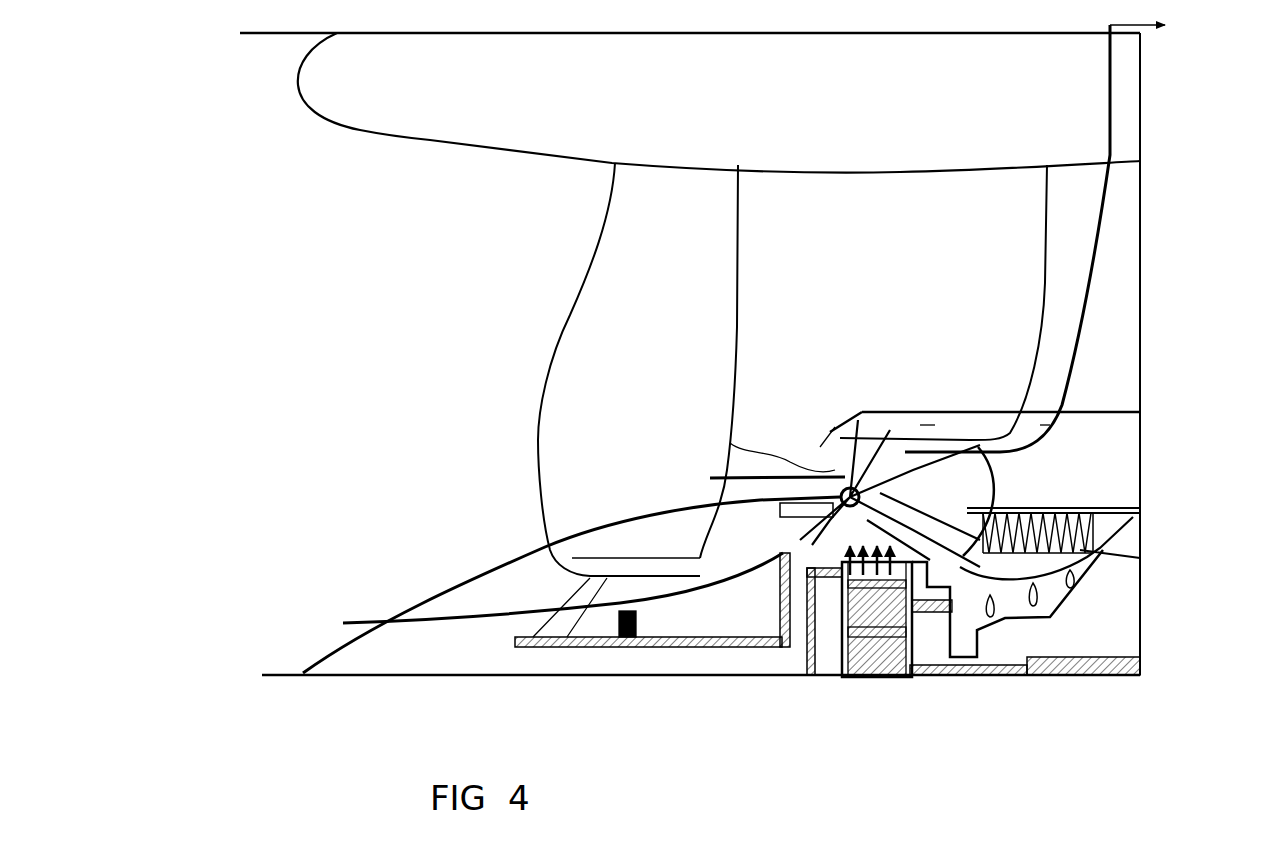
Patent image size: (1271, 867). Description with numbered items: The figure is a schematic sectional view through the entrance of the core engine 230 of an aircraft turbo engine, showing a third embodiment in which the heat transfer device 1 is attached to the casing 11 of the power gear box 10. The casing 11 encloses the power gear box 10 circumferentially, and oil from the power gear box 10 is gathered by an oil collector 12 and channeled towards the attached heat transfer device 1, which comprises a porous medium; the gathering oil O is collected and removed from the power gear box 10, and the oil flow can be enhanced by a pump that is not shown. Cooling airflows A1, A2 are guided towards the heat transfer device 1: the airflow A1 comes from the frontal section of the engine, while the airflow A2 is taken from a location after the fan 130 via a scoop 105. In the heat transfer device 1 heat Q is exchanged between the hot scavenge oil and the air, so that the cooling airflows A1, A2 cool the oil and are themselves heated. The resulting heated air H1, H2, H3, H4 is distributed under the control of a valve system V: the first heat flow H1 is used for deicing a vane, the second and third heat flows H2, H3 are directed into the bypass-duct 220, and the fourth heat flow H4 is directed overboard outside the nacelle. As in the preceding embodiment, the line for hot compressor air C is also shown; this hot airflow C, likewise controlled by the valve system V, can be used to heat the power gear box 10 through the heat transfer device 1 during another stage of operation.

The fan 130 is at (600, 288).
The bypass-duct 220 is at (934, 259).
The core engine 230 is at (935, 405).
The scoop 105 is at (758, 482).
The heat transfer device 1 is at (805, 487).
The casing 11 is at (797, 553).
The oil collector 12 is at (822, 580).
The power gear box 10 is at (903, 643).
The heat Q is at (870, 647).
The hot airflow C is at (1055, 605).
The valve system V is at (1020, 502).
The gathering oil O is at (1085, 409).
The first heat flow H1 is at (820, 447).
The second heat flow H2 is at (912, 406).
The third heat flow H3 is at (1042, 406).
The fourth heat flow H4 is at (1164, 30).
The airflow A1 is at (334, 624).
The airflow A2 is at (706, 478).